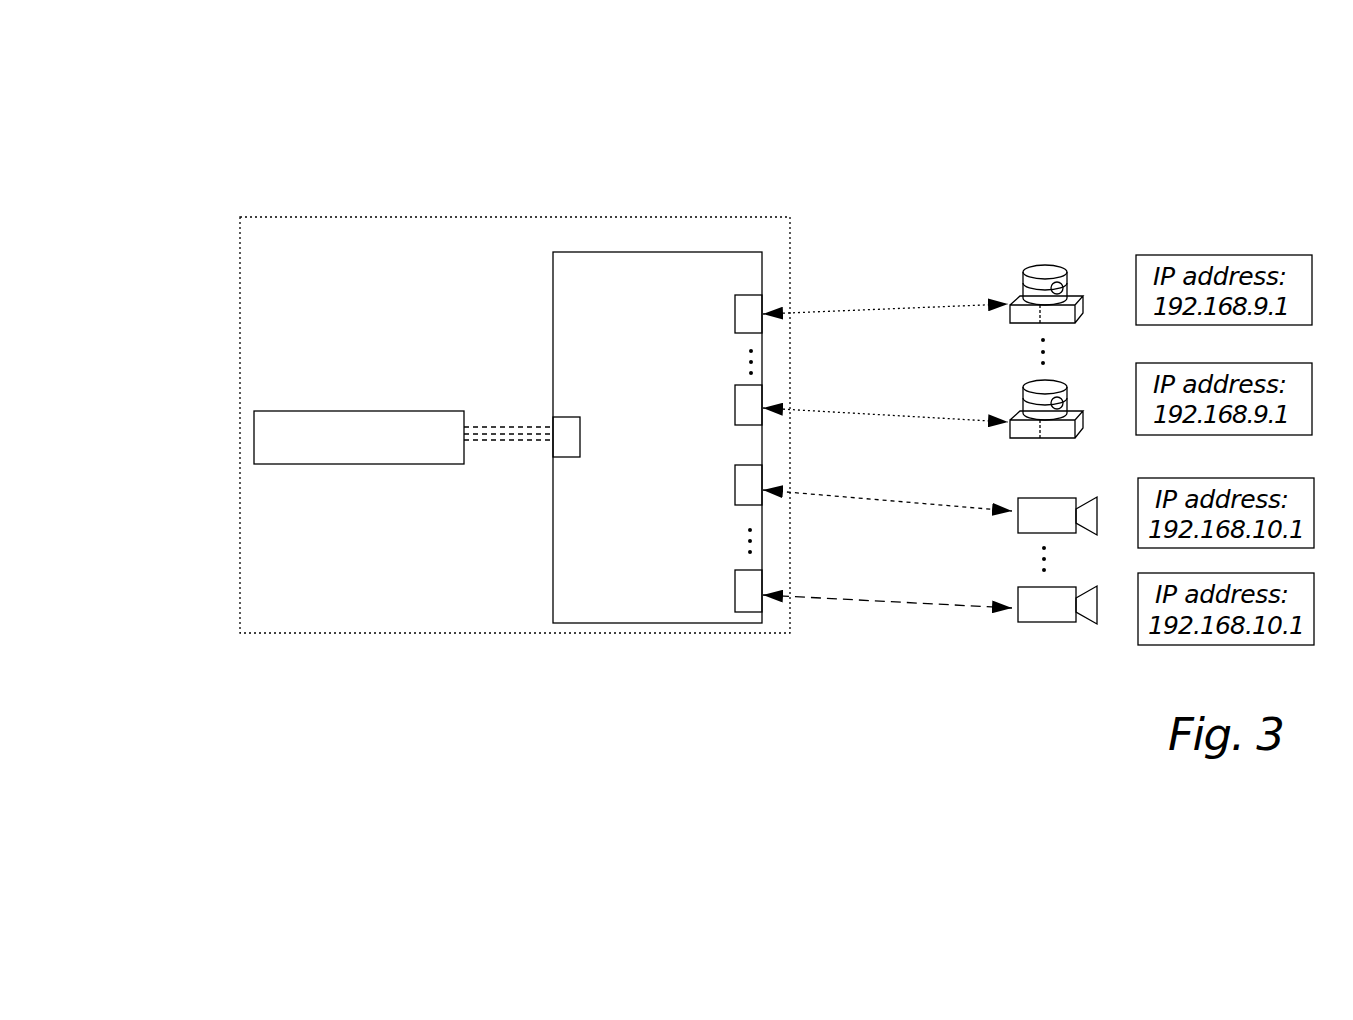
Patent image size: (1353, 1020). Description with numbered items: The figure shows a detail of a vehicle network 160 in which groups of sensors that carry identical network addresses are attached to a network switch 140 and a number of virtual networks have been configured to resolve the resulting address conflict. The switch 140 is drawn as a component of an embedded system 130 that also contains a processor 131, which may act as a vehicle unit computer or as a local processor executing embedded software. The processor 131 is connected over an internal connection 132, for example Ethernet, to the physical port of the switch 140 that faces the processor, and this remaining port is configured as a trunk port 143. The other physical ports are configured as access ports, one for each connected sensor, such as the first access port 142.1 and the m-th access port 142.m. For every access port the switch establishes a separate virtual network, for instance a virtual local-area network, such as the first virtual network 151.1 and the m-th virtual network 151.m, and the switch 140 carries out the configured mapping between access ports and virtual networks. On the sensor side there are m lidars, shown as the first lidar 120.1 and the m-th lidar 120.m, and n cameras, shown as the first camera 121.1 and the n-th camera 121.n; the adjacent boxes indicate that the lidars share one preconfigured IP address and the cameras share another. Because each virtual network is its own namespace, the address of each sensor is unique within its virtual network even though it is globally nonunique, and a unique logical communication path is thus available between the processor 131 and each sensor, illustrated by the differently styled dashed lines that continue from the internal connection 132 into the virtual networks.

The vehicle network 160 is at (207, 195).
The embedded system 130 is at (240, 293).
The processor 131 is at (254, 440).
The internal connection 132 is at (509, 427).
The trunk port 143 is at (567, 417).
The network switch 140 is at (730, 633).
The access port 142.1 is at (748, 295).
The access port 142.m is at (735, 407).
The virtual network 151.1 is at (860, 312).
The virtual network 151.m is at (876, 415).
The lidar 120.1 is at (1047, 272).
The lidar 120.m is at (1048, 387).
The camera 121.1 is at (1045, 498).
The camera 121.n is at (1037, 623).